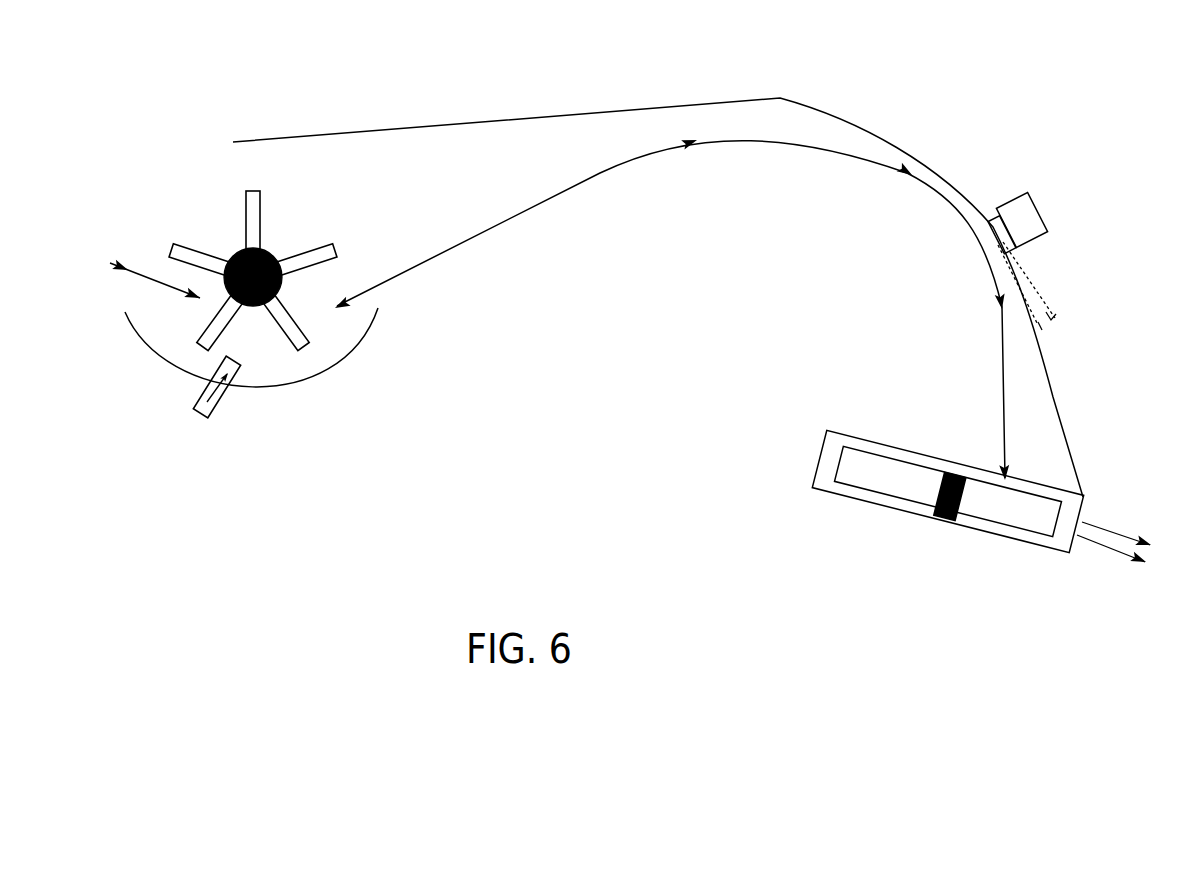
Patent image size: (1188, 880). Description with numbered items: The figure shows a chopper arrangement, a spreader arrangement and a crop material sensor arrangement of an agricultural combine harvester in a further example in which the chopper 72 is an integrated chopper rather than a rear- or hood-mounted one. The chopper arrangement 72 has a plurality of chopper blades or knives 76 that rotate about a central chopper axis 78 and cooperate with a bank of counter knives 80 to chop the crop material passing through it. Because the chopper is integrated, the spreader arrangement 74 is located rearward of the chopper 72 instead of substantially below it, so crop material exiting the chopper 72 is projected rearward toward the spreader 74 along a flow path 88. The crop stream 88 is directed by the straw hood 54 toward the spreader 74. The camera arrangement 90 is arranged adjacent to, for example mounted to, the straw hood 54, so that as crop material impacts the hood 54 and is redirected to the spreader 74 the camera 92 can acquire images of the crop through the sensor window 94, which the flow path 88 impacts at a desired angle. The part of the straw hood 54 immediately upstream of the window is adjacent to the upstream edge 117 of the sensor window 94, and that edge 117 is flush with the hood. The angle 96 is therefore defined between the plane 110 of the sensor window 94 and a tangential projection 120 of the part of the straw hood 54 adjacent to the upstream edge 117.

The straw hood 54 is at (862, 125).
The chopper arrangement 72 is at (158, 182).
The spreader arrangement 74 is at (920, 556).
The chopper blades 76 is at (297, 347).
The central chopper axis 78 is at (270, 248).
The bank of counter knives 80 is at (203, 418).
The flow path 88 is at (600, 173).
The crop material sensor arrangement 90 is at (1060, 165).
The crop material sensor 92 is at (1007, 195).
The sensor window 94 is at (1005, 243).
The angle 96 is at (1047, 323).
The plane of the sensor window 110 is at (1045, 325).
The upstream edge of the sensor window 117 is at (987, 222).
The tangential projection 120 is at (1042, 302).